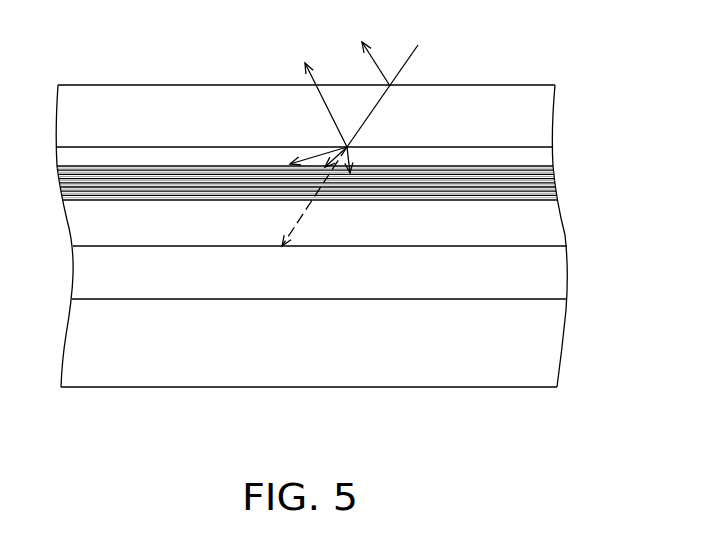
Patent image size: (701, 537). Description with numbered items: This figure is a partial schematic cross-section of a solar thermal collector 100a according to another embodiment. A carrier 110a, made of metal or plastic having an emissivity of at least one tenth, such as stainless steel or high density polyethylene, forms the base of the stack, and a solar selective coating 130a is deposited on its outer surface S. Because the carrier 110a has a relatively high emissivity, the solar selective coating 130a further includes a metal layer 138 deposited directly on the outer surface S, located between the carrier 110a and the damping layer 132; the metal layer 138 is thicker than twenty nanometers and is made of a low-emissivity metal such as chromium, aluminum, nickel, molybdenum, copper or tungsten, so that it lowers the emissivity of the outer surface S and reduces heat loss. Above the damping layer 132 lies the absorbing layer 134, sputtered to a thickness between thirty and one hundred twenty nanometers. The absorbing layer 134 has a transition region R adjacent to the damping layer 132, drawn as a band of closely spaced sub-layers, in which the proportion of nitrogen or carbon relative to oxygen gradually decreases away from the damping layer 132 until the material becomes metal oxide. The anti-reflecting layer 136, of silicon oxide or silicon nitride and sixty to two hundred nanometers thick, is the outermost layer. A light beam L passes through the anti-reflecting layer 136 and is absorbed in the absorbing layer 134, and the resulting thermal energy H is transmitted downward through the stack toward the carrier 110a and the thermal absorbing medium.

The solar thermal collector 100a is at (630, 444).
The carrier 110a is at (537, 342).
The solar selective coating 130a is at (618, 100).
The damping layer 132 is at (535, 227).
The absorbing layer 134 is at (502, 175).
The anti-reflecting layer 136 is at (532, 122).
The metal layer 138 is at (540, 272).
The outer surface S is at (518, 298).
The light beam L is at (362, 95).
The thermal energy H is at (314, 196).
The transition region R is at (52, 167).